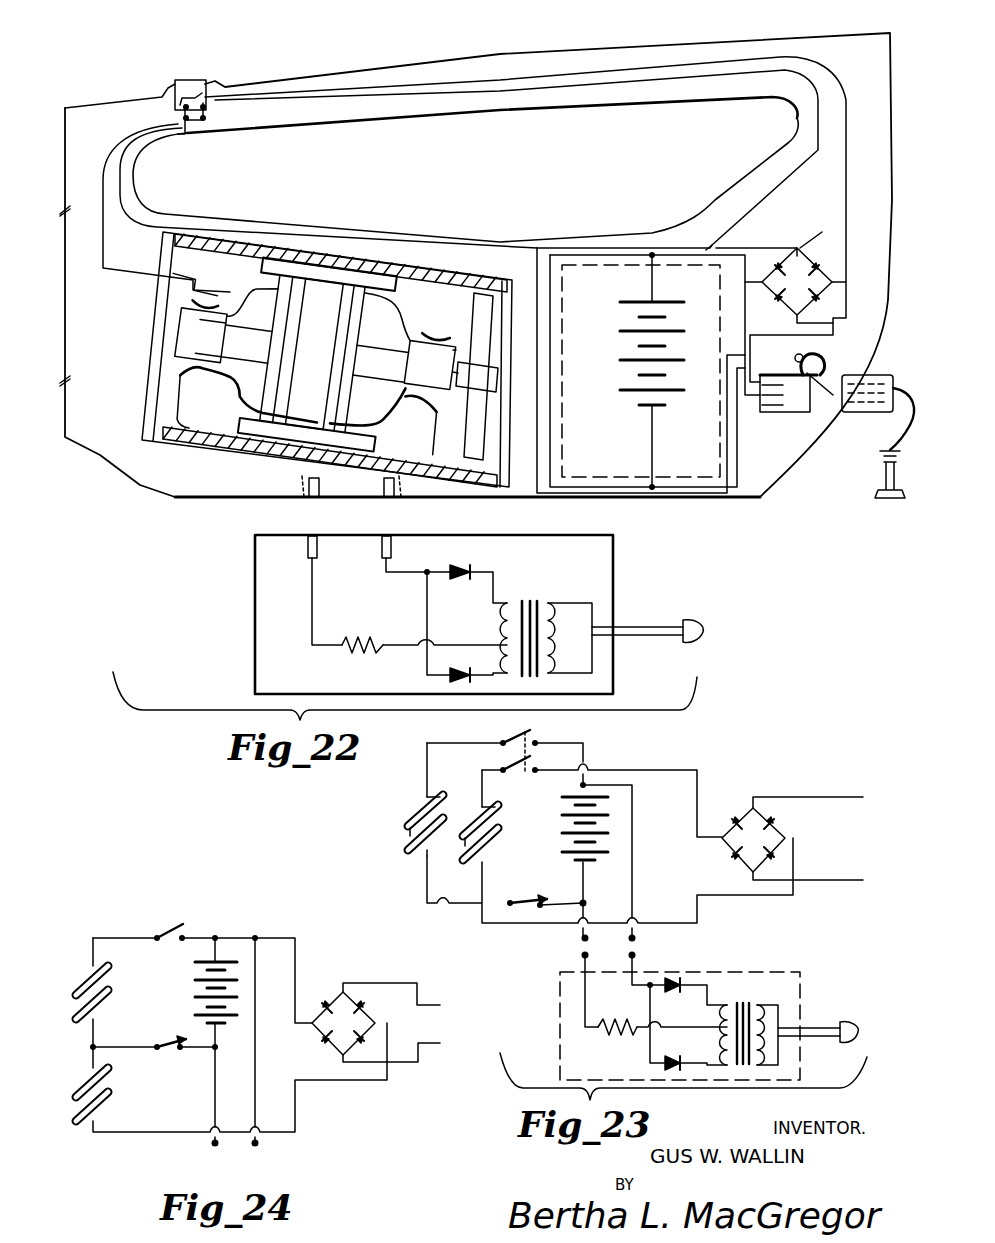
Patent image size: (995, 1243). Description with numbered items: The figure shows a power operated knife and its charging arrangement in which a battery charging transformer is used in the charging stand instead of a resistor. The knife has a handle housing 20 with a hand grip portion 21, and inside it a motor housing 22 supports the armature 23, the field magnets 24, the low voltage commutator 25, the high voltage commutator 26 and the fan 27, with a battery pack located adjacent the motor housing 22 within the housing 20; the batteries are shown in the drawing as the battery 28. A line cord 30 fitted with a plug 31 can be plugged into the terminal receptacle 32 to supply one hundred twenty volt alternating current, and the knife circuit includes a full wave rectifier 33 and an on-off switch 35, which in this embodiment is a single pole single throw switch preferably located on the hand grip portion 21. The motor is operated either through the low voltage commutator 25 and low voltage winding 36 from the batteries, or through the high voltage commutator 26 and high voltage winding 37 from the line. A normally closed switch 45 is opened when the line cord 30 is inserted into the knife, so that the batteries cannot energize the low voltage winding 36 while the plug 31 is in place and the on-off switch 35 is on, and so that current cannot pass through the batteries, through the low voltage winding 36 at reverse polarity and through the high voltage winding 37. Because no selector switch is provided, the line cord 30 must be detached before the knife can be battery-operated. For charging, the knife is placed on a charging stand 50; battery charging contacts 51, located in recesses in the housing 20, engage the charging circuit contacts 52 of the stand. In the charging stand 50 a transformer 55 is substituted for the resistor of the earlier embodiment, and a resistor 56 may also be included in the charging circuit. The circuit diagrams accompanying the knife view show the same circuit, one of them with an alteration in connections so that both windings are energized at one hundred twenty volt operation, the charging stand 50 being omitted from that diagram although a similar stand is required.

In FIG. 22, the handle housing 20 is at (757, 502).
In FIG. 22, the hand grip portion 21 is at (547, 53).
In FIG. 22, the motor housing 22 is at (282, 447).
In FIG. 22, the armature 23 is at (326, 292).
In FIG. 22, the field magnets 24 is at (354, 273).
In FIG. 22, the low voltage commutator 25 is at (188, 338).
In FIG. 22, the high voltage commutator 26 is at (431, 348).
In FIG. 22, the fan 27 is at (480, 300).
In FIG. 22, the battery 28 is at (628, 362).
In FIG. 23, the battery 28 is at (563, 853).
In FIG. 24, the battery 28 is at (232, 960).
In FIG. 22, the line cord 30 is at (882, 466).
In FIG. 22, the plug 31 is at (867, 375).
In FIG. 22, the terminal receptacle 32 is at (788, 414).
In FIG. 22, the full wave rectifier 33 is at (795, 258).
In FIG. 23, the full wave rectifier 33 is at (751, 810).
In FIG. 24, the full wave rectifier 33 is at (342, 990).
In FIG. 22, the on-off switch 35 is at (193, 82).
In FIG. 23, the on-off switch 35 is at (523, 767).
In FIG. 24, the on-off switch 35 is at (178, 925).
In FIG. 22, the low voltage winding 36 is at (273, 394).
In FIG. 23, the low voltage winding 36 is at (412, 822).
In FIG. 24, the low voltage winding 36 is at (110, 994).
In FIG. 22, the high voltage winding 37 is at (380, 421).
In FIG. 23, the high voltage winding 37 is at (468, 856).
In FIG. 24, the high voltage winding 37 is at (110, 1098).
In FIG. 22, the switch 45 is at (810, 382).
In FIG. 23, the switch 45 is at (527, 908).
In FIG. 24, the switch 45 is at (168, 1050).
In FIG. 22, the charging stand 50 is at (254, 578).
In FIG. 23, the charging stand 50 is at (767, 970).
In FIG. 22, the battery charging contacts 51 is at (311, 490).
In FIG. 23, the battery charging contacts 51 is at (584, 938).
In FIG. 24, the battery charging contacts 51 is at (214, 1143).
In FIG. 22, the charging circuit contacts 52 is at (380, 545).
In FIG. 23, the charging circuit contacts 52 is at (580, 955).
In FIG. 22, the transformer 55 is at (534, 600).
In FIG. 23, the transformer 55 is at (773, 1003).
In FIG. 22, the resistor 56 is at (354, 650).
In FIG. 23, the resistor 56 is at (624, 1032).